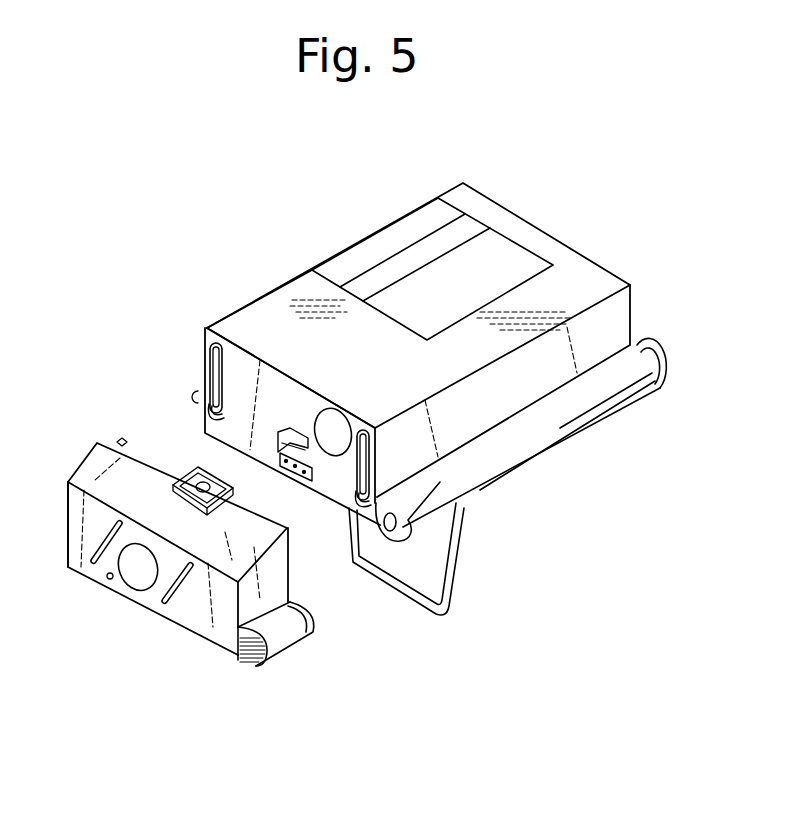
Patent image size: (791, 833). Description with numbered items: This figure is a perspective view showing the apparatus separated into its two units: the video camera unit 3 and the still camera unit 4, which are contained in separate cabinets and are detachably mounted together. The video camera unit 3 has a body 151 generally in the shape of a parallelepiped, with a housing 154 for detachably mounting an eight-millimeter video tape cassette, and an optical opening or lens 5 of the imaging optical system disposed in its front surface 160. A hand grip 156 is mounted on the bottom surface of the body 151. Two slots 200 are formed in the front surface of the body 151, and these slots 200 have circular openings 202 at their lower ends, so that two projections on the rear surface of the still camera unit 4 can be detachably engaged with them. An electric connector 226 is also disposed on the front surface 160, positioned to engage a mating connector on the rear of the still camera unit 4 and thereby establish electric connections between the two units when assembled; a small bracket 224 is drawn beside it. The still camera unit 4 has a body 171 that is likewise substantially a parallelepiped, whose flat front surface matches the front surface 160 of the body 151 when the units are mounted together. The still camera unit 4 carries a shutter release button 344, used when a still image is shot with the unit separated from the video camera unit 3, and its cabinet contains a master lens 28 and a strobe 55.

The video camera unit 3 is at (300, 272).
The housing 154 is at (500, 246).
The body 151 is at (237, 373).
The front surface 160 is at (233, 347).
The slots 200 is at (213, 360).
The openings 202 is at (210, 433).
The lens 5 is at (340, 422).
The bracket 224 is at (293, 443).
The electric connector 226 is at (320, 475).
The hand grip 156 is at (463, 545).
The still camera unit 4 is at (153, 628).
The shutter release button 344 is at (117, 437).
The body 171 is at (77, 533).
The master lens 28 is at (137, 577).
The strobe 55 is at (237, 650).